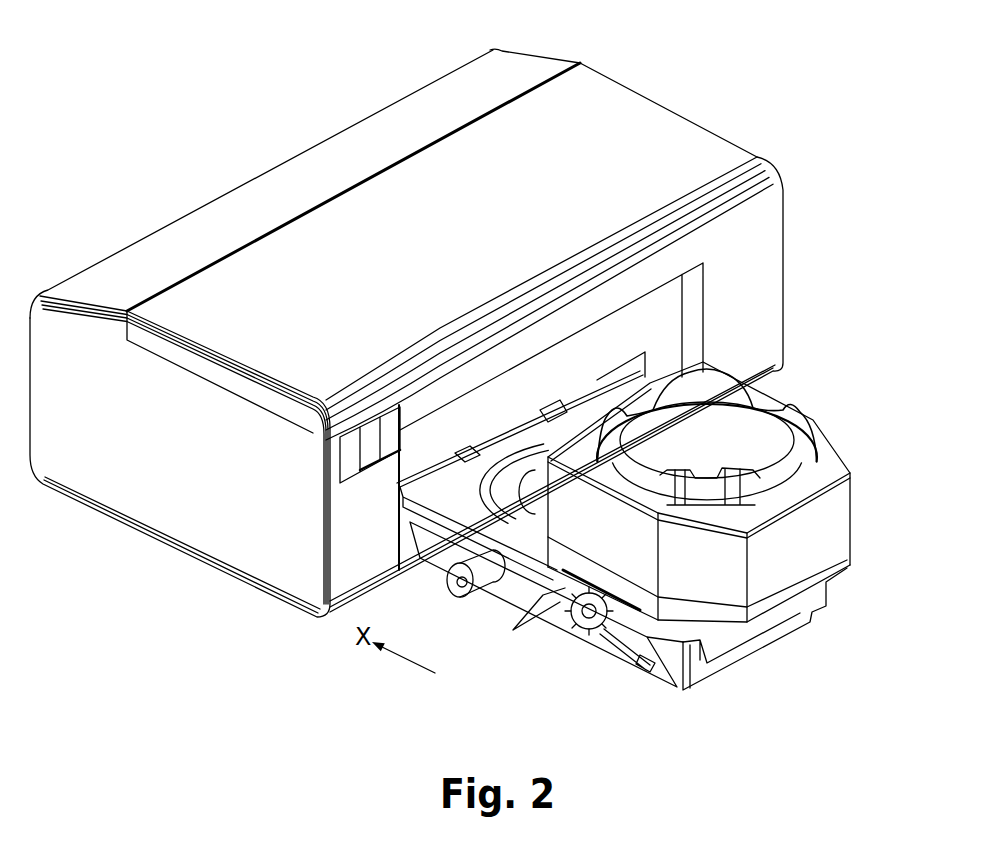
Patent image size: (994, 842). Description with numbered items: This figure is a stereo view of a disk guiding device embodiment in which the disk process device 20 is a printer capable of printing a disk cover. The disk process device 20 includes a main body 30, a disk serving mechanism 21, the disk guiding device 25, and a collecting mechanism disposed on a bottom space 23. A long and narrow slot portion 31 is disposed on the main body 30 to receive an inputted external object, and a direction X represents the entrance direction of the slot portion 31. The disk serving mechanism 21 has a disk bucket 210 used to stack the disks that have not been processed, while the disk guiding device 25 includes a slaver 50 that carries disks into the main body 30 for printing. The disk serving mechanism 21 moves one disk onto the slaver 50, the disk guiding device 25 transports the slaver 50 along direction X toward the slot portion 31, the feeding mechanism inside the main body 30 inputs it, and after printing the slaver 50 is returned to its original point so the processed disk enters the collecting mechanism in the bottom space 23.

The disk process device 20 is at (753, 82).
The main body 30 is at (203, 222).
The slot portion 31 is at (403, 495).
The slaver 50 is at (456, 487).
The disk bucket 210 is at (845, 512).
The disk serving mechanism 21 is at (778, 446).
The disk guiding device 25 is at (748, 666).
The bottom space 23 is at (540, 598).